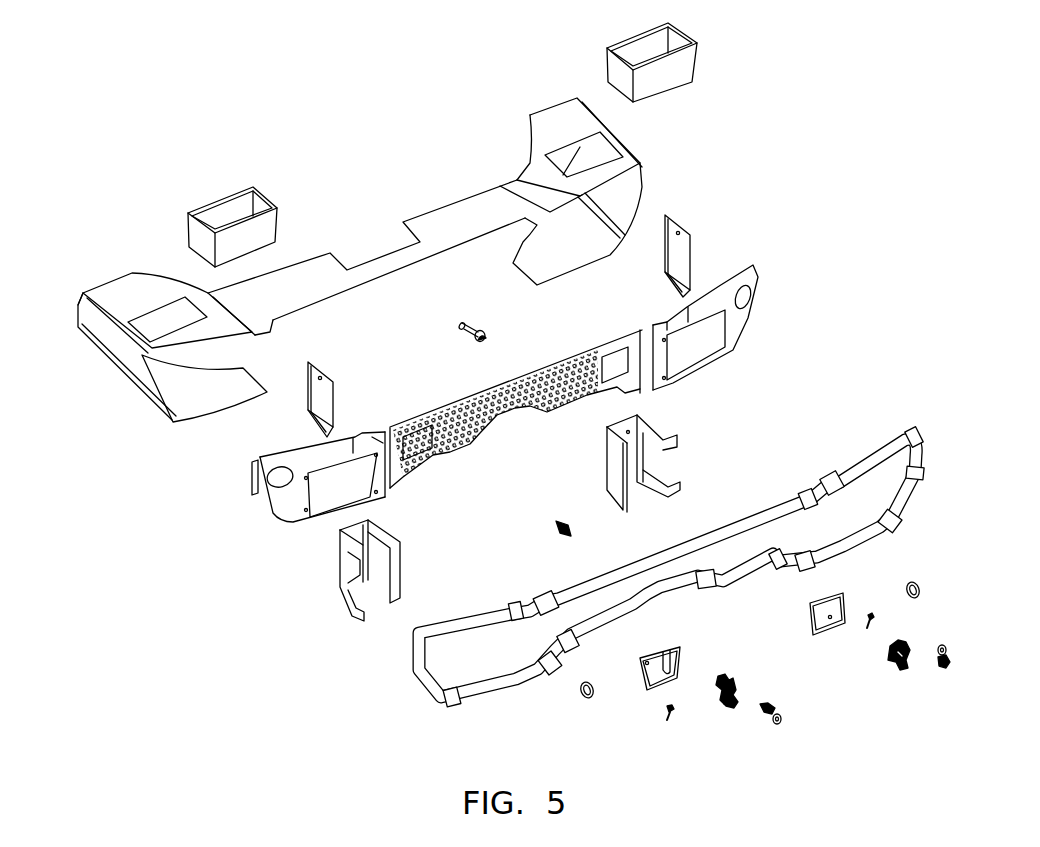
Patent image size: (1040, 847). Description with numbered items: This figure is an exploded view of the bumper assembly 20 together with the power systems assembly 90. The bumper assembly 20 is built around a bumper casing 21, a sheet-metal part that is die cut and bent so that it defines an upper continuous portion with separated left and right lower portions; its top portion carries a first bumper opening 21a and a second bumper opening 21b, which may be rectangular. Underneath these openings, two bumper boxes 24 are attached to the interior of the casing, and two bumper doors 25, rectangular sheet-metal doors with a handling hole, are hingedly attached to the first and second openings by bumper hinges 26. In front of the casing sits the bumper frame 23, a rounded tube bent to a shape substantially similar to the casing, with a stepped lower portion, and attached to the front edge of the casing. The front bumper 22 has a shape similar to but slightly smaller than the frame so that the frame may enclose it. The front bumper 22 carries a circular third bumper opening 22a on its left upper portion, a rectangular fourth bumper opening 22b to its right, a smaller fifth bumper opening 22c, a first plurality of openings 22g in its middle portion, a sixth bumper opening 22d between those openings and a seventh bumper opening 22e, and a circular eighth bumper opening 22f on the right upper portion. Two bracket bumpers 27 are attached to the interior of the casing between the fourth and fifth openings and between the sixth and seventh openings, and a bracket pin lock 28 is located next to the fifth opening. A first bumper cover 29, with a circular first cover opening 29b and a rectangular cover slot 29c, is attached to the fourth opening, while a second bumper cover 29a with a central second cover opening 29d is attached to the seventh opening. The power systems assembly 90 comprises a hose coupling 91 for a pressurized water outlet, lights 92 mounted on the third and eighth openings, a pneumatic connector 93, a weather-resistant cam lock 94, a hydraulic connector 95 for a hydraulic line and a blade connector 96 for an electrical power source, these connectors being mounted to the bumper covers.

The bumper assembly 20 is at (83, 293).
The bumper casing 21 is at (113, 282).
The first bumper opening 21a is at (147, 320).
The second bumper opening 21b is at (564, 157).
The front bumper 22 is at (506, 405).
The third bumper opening 22a is at (277, 474).
The fourth bumper opening 22b is at (316, 503).
The fifth bumper opening 22c is at (414, 430).
The sixth bumper opening 22d is at (609, 360).
The seventh bumper opening 22e is at (696, 362).
The eighth bumper opening 22f is at (750, 297).
The first plurality of openings 22g is at (453, 412).
The bumper frame 23 is at (916, 434).
The bumper boxes 24 is at (221, 204).
The bumper doors 25 is at (313, 364).
The bumper hinges 26 is at (309, 422).
The bracket bumpers 27 is at (342, 583).
The bracket pin lock 28 is at (560, 524).
The first bumper cover 29 is at (649, 666).
The second bumper cover 29a is at (807, 627).
The first cover opening 29b is at (645, 661).
The cover slot 29c is at (670, 652).
The second cover opening 29d is at (830, 621).
The power systems assembly 90 is at (728, 702).
The hose coupling 91 is at (668, 714).
The lights 92 is at (585, 698).
The pneumatic connector 93 is at (869, 624).
The cam lock 94 is at (488, 334).
The hydraulic connector 95 is at (727, 678).
The blade connector 96 is at (777, 725).